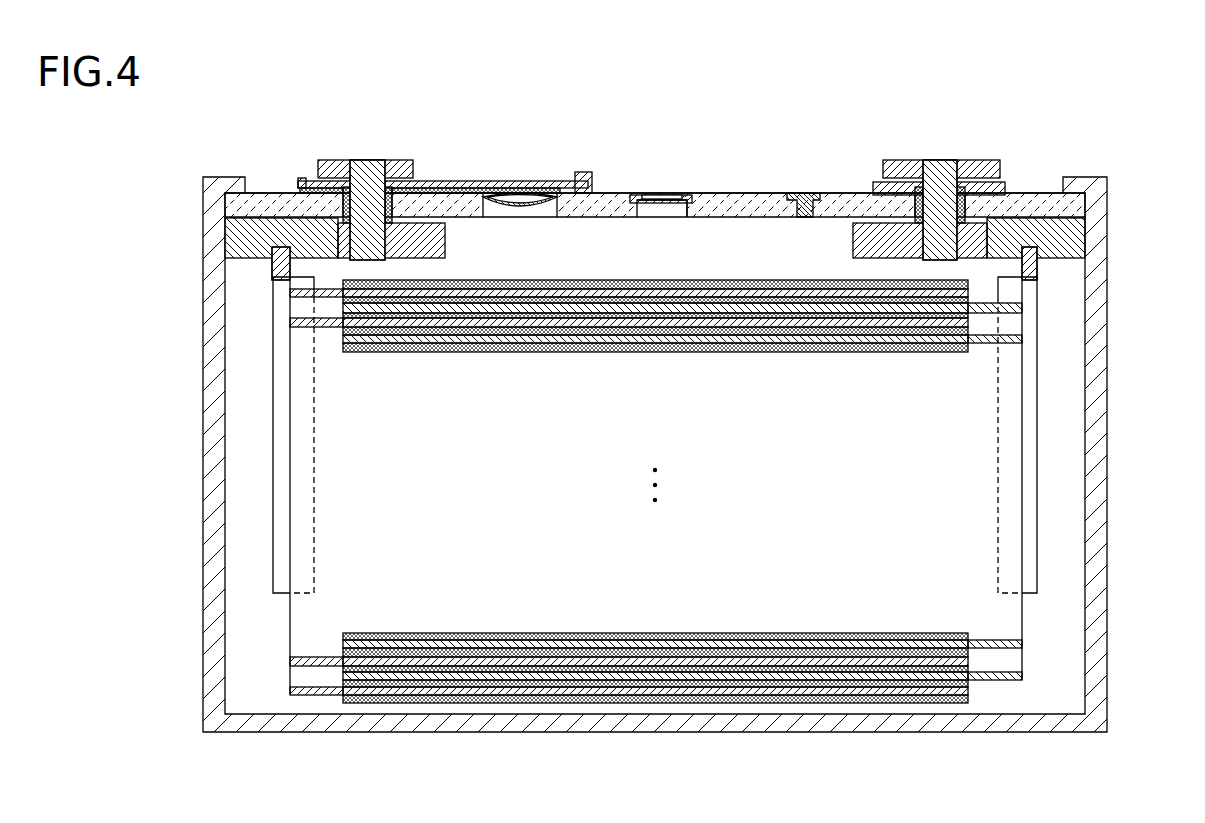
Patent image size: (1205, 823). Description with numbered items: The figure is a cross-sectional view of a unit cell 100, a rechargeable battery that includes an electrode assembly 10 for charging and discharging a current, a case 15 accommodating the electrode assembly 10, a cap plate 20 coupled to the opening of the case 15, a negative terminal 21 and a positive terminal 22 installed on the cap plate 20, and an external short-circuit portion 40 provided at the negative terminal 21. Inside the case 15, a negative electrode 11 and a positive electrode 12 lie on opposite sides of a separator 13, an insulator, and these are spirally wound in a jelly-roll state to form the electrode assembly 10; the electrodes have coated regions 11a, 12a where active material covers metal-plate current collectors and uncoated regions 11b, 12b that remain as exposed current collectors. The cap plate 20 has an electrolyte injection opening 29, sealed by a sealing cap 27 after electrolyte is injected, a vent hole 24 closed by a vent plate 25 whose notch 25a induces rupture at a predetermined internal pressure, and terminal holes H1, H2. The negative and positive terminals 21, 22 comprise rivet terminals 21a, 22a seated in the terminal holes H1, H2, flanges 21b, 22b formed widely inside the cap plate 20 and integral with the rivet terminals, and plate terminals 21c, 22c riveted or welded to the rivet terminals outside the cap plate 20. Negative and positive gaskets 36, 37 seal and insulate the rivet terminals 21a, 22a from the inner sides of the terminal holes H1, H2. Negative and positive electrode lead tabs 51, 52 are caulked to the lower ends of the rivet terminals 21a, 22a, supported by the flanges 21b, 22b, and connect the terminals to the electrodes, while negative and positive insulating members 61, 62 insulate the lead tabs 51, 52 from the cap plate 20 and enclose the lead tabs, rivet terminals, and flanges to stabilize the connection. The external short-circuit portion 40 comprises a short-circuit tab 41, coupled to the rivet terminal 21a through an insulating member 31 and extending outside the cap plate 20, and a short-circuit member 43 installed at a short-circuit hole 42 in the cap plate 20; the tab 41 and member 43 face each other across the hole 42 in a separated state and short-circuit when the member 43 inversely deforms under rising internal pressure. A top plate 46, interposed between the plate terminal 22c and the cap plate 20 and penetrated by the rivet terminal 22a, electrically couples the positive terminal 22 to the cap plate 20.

The unit cell 100 is at (652, 100).
The electrode assembly 10 is at (790, 708).
The negative electrode 11 is at (300, 784).
The coated region 11a is at (445, 697).
The uncoated region 11b is at (315, 697).
The positive electrode 12 is at (875, 784).
The coated region 12a is at (890, 682).
The uncoated region 12b is at (1022, 682).
The separator 13 is at (670, 668).
The case 15 is at (1100, 384).
The cap plate 20 is at (730, 205).
The negative terminal 21 is at (367, 160).
The rivet terminal 21a is at (370, 262).
The flange 21b is at (405, 222).
The plate terminal 21c is at (396, 162).
The positive terminal 22 is at (940, 160).
The rivet terminal 22a is at (943, 262).
The flange 22b is at (900, 228).
The plate terminal 22c is at (985, 165).
The vent hole 24 is at (662, 218).
The vent plate 25 is at (678, 196).
The notch 25a is at (648, 195).
The sealing cap 27 is at (808, 198).
The electrolyte injection opening 29 is at (800, 193).
The insulating member 31 is at (588, 180).
The negative gasket 36 is at (343, 200).
The positive gasket 37 is at (893, 183).
The external short-circuit portion 40 is at (515, 180).
The short-circuit tab 41 is at (478, 183).
The short-circuit hole 42 is at (548, 200).
The short-circuit member 43 is at (512, 211).
The top plate 46 is at (1000, 190).
The negative electrode lead tab 51 is at (272, 400).
The positive electrode lead tab 52 is at (1038, 558).
The negative insulating member 61 is at (240, 248).
The positive insulating member 62 is at (1075, 240).
The terminal hole H1 is at (350, 180).
The terminal hole H2 is at (955, 180).